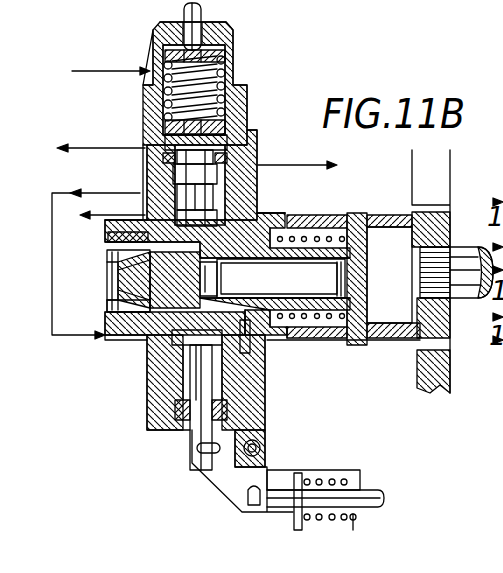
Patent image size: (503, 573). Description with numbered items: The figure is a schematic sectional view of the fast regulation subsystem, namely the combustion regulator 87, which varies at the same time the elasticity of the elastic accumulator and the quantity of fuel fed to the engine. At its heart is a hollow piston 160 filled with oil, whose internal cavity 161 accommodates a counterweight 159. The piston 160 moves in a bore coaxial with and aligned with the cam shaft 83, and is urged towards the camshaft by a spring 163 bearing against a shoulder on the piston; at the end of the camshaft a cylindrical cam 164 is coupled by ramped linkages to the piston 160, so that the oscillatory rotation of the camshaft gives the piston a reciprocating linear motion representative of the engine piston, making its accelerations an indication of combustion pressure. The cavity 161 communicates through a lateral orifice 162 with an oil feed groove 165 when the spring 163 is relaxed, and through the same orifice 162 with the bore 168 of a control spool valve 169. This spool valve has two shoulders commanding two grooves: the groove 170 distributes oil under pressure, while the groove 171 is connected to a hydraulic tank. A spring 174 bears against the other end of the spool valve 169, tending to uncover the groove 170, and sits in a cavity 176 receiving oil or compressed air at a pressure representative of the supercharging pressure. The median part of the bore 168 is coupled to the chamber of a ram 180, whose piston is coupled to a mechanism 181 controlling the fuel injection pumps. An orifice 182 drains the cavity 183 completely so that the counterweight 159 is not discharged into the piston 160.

The combustion regulator 87 is at (273, 110).
The spring 174 is at (154, 60).
The cavity 176 is at (238, 68).
The groove 171 is at (257, 148).
The control spool valve 169 is at (148, 171).
The groove 170 is at (232, 216).
The bore 168 is at (110, 243).
The lateral orifice 162 is at (115, 263).
The hollow piston 160 is at (160, 283).
The internal cavity 161 is at (117, 310).
The counterweight 159 is at (290, 293).
The oil feed groove 165 is at (282, 214).
The spring 163 is at (333, 212).
The cavity 183 is at (340, 333).
The orifice 182 is at (383, 279).
The cylindrical cam 164 is at (395, 338).
The cam shaft 83 is at (470, 246).
The ram 180 is at (183, 347).
The mechanism 181 is at (290, 515).